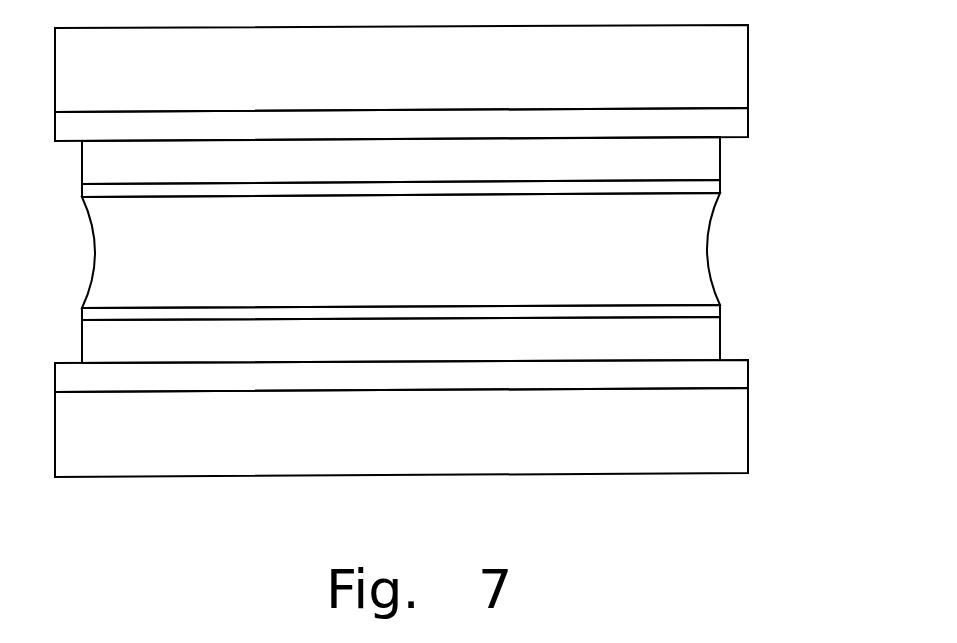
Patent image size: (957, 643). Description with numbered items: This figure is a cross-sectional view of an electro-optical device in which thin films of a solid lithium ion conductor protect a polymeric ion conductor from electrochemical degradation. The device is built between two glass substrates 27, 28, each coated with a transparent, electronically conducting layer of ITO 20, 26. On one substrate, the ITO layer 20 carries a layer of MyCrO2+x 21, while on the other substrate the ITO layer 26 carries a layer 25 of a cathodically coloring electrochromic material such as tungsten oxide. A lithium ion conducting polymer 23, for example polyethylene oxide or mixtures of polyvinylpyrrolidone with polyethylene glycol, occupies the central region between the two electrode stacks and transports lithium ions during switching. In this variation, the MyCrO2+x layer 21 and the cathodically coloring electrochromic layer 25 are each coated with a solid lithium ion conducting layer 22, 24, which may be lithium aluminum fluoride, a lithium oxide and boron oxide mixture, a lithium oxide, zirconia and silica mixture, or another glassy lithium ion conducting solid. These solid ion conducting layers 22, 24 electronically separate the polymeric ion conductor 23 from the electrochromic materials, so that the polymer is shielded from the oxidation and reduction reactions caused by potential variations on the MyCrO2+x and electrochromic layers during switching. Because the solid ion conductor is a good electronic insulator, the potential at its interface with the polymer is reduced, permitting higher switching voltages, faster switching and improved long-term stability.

The transparent electronically conducting ITO layer 20 is at (733, 122).
The MyCrO2+x layer 21 is at (697, 157).
The solid Li+ ion conducting layer 22 is at (700, 183).
The Li+ ion conducting polymer 23 is at (658, 235).
The solid Li+ ion conducting layer 24 is at (703, 310).
The cathodically coloring electrochromic layer 25 is at (705, 342).
The transparent electronically conducting ITO layer 26 is at (740, 372).
The glass substrate 27 is at (401, 68).
The glass substrate 28 is at (401, 432).